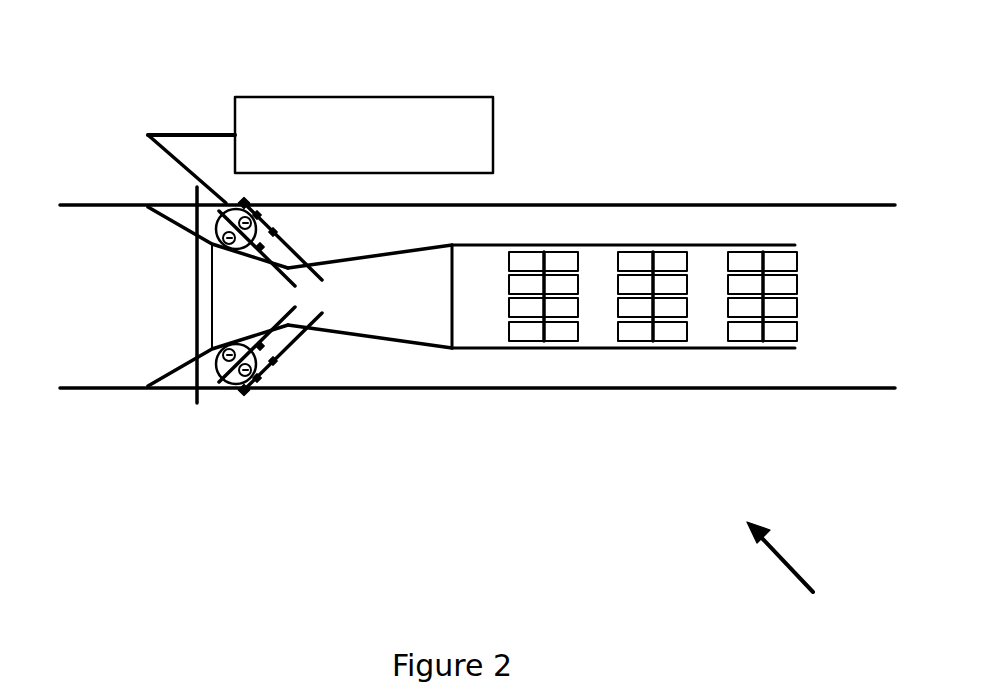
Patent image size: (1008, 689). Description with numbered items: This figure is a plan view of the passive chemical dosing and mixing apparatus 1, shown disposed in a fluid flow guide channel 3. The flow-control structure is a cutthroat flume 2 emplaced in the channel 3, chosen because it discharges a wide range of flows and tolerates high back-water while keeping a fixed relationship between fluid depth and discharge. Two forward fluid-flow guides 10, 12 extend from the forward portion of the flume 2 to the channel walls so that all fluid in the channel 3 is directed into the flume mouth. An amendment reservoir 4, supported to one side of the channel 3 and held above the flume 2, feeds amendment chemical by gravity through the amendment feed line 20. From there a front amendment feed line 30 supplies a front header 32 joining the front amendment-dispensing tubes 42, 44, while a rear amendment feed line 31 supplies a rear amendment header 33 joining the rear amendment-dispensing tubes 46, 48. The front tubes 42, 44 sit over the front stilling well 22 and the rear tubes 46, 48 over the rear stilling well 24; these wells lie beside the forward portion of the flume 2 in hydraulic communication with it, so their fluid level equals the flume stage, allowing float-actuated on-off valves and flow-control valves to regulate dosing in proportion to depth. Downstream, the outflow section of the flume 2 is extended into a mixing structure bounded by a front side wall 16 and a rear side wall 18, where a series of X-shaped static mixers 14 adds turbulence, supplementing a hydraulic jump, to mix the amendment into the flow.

The passive chemical dosing and mixing apparatus 1 is at (787, 575).
The cutthroat flume 2 is at (400, 250).
The fluid flow guide channel 3 is at (793, 203).
The amendment reservoir 4 is at (350, 87).
The forward fluid-flow guide 10 is at (160, 372).
The forward fluid-flow guide 12 is at (160, 220).
The static mixers 14 is at (555, 285).
The front side wall 16 is at (694, 352).
The rear side wall 18 is at (687, 243).
The amendment feed line 20 is at (160, 128).
The front stilling well 22 is at (225, 382).
The rear stilling well 24 is at (222, 216).
The front amendment feed line 30 is at (190, 317).
The rear amendment feed line 31 is at (222, 203).
The lower hinge 32 is at (240, 398).
The rear amendment header 33 is at (236, 200).
The front amendment-dispensing tube 42 is at (290, 357).
The front amendment-dispensing tube 44 is at (283, 330).
The rear amendment-dispensing tube 46 is at (295, 262).
The rear amendment-dispensing tube 48 is at (290, 243).